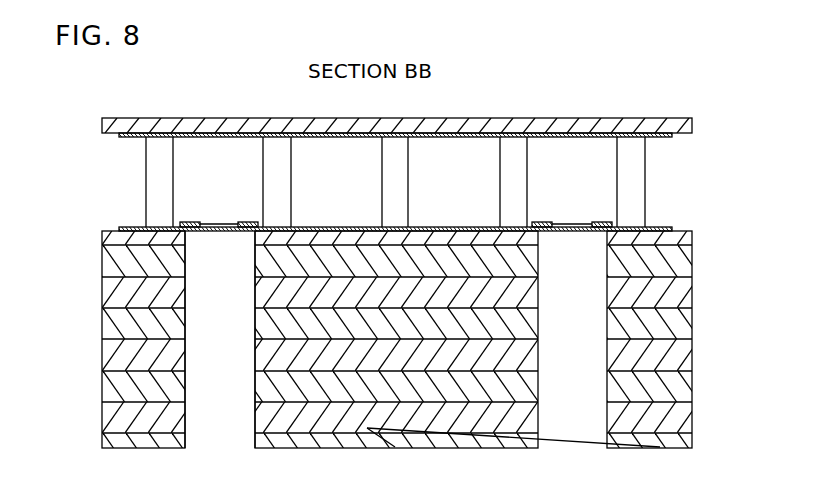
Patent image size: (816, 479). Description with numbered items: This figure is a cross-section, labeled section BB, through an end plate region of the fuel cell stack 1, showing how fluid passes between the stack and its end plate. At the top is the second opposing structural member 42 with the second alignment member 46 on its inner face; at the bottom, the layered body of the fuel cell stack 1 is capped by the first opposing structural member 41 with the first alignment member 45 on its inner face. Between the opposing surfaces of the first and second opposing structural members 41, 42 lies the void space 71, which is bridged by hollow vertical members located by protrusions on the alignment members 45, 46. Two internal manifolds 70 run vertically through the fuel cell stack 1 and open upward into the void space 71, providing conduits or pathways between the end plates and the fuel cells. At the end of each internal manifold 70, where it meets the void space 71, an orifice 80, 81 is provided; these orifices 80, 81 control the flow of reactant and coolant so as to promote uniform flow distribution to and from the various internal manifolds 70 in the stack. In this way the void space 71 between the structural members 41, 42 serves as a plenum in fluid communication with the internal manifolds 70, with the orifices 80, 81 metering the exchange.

The fuel cell stack 1 is at (692, 360).
The first opposing structural member 41 is at (691, 235).
The second opposing structural member 42 is at (692, 124).
The first alignment member 45 is at (672, 228).
The second alignment member 46 is at (672, 137).
The internal manifold 70 is at (220, 317).
The void space 71 is at (223, 175).
The orifice 80 is at (185, 222).
The orifice 81 is at (607, 223).